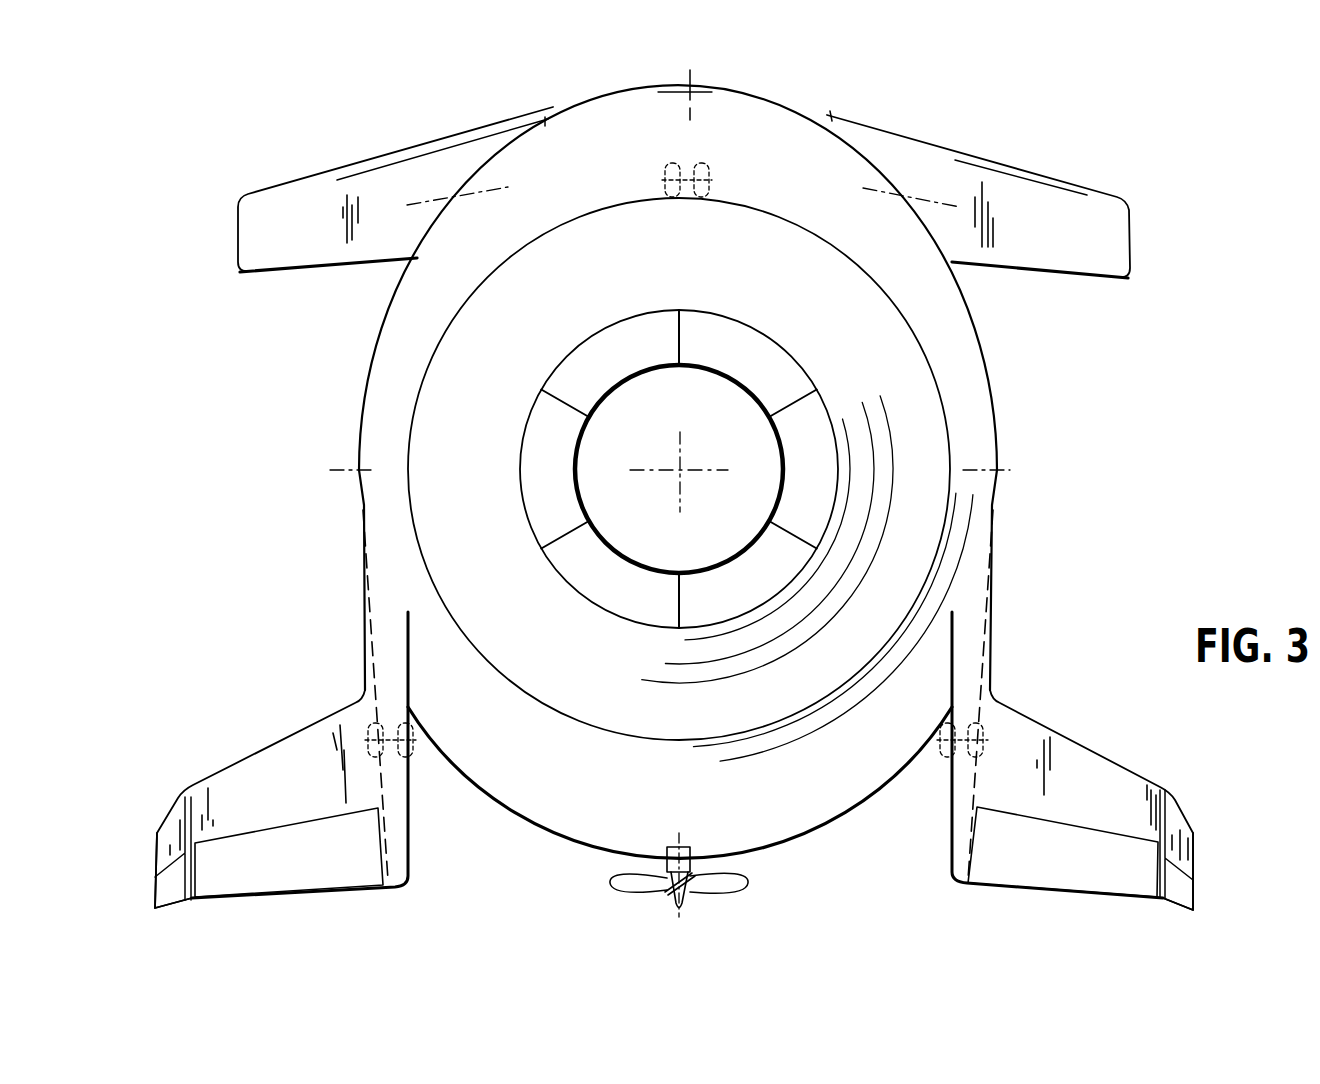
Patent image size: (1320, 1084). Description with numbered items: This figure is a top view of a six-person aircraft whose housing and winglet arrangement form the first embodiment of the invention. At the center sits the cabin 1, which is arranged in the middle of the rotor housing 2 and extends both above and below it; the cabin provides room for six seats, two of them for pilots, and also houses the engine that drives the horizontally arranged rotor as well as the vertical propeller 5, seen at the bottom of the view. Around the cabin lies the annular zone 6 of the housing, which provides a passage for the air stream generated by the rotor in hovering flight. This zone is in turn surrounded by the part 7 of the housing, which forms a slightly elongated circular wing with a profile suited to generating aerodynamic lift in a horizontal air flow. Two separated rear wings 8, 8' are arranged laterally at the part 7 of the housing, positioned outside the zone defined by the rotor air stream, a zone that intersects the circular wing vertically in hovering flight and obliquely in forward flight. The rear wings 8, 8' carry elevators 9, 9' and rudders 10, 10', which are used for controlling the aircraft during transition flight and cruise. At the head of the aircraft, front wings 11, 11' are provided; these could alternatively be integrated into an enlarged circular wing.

The cabin 1 is at (763, 462).
The rotor housing 2 is at (1012, 502).
The vertical propeller 5 is at (708, 905).
The annular zone 6 is at (905, 380).
The part of the housing 7 is at (943, 310).
The rear wing 8 is at (1108, 710).
The rear wing 8' is at (285, 709).
The elevator 9 is at (1063, 884).
The elevator 9' is at (289, 881).
The rudder 10 is at (1219, 880).
The rudder 10' is at (139, 873).
The front wing 11 is at (1017, 194).
The front wing 11' is at (395, 181).